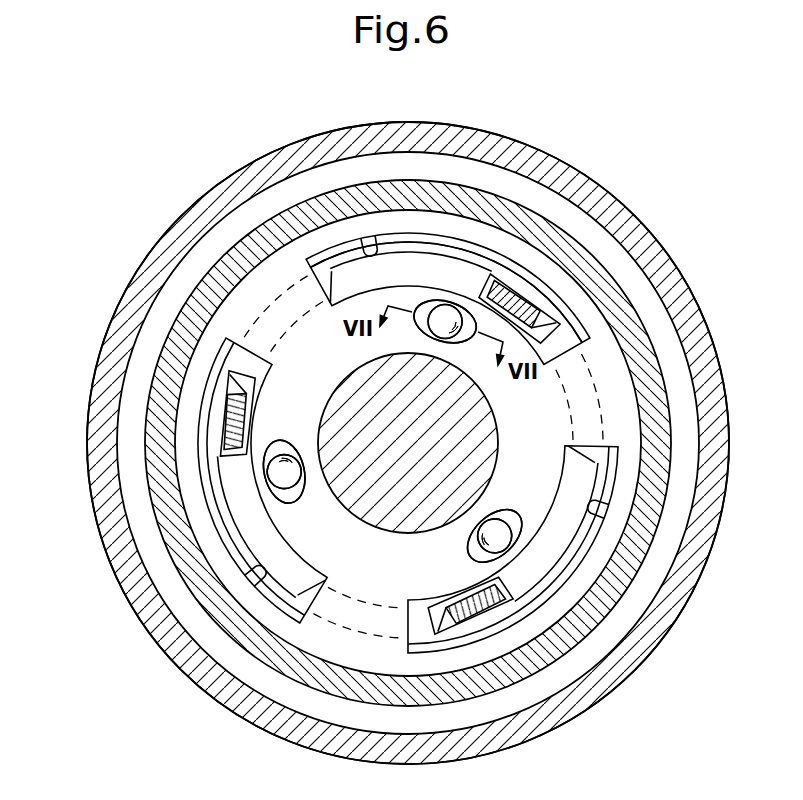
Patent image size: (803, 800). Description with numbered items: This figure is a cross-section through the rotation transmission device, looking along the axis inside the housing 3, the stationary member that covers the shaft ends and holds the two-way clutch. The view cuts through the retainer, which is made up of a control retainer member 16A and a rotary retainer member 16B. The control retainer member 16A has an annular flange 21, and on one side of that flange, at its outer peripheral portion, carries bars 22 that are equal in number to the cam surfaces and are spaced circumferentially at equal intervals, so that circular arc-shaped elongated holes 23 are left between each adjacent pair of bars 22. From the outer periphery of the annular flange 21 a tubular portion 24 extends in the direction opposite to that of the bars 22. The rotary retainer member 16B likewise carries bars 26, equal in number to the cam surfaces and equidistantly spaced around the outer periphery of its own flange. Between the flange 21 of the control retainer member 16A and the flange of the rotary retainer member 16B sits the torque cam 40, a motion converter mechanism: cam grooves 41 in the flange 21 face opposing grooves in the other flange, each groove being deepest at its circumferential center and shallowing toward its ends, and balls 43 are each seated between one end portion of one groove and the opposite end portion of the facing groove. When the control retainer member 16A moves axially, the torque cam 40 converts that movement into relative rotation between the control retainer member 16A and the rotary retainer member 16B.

The housing 3 is at (180, 242).
The bars 22 is at (202, 186).
The control retainer member 16A is at (307, 228).
The rotary retainer member 16B is at (545, 293).
The annular flange 21 is at (333, 233).
The circular arc-shaped elongated holes 23 is at (376, 235).
The tubular portion 24 is at (207, 376).
The bars 26 is at (556, 322).
The torque cam 40 is at (447, 305).
The cam grooves 41 is at (280, 448).
The balls 43 is at (283, 474).